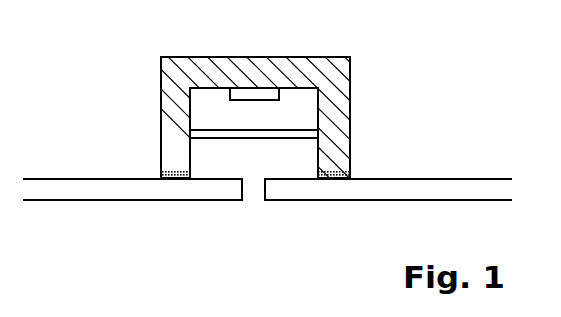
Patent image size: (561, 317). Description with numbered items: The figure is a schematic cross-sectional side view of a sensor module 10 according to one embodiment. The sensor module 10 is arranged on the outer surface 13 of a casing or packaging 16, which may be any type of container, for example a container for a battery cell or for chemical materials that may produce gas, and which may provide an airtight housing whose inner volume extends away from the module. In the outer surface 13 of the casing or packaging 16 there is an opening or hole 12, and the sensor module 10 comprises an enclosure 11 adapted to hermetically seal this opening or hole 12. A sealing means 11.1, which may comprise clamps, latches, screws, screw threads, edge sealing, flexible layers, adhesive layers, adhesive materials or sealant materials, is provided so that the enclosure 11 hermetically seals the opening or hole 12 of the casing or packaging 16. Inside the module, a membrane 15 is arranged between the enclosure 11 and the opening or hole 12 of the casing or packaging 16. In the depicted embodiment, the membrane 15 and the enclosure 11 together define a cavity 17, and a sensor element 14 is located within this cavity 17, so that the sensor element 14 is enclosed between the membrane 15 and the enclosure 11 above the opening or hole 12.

The sensor module 10 is at (103, 39).
The enclosure 11 is at (168, 125).
The sealing means 11.1 is at (160, 175).
The opening or hole 12 is at (255, 192).
The outer surface 13 is at (400, 178).
The sensor element 14 is at (248, 97).
The membrane 15 is at (237, 138).
The casing or packaging 16 is at (373, 190).
The cavity 17 is at (203, 112).